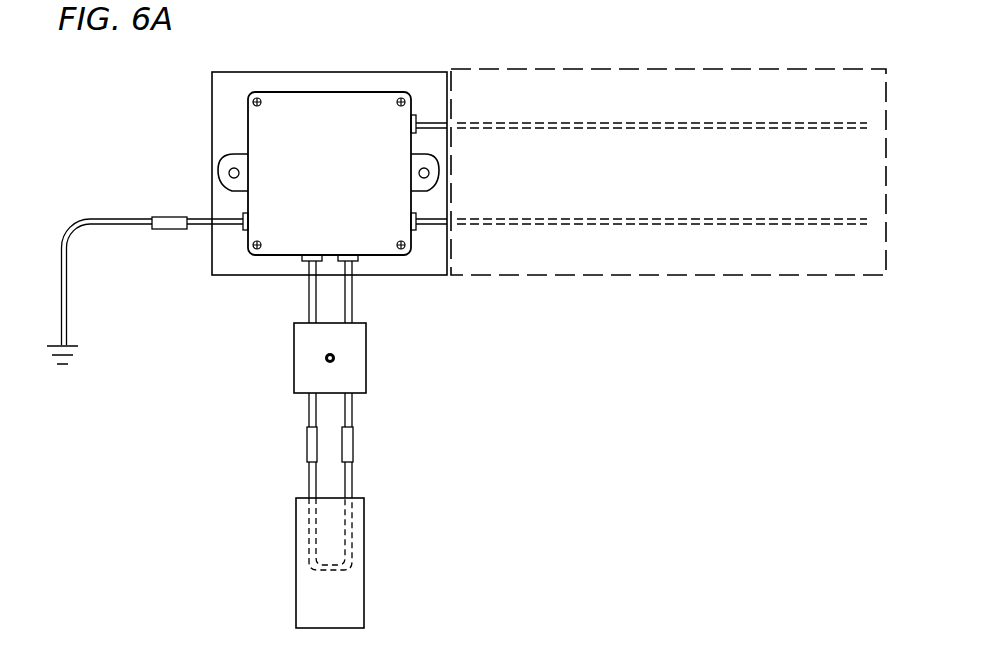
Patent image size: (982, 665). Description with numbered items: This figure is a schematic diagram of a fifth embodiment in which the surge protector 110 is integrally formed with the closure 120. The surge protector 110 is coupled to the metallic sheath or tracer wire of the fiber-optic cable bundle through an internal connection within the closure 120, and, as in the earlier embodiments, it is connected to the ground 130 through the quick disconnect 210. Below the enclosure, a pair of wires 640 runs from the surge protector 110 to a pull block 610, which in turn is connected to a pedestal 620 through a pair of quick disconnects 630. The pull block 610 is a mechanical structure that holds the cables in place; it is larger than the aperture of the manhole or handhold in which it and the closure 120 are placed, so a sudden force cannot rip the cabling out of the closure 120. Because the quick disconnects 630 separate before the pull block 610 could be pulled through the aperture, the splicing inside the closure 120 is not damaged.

The surge protector 110 is at (298, 88).
The closure 120 is at (667, 69).
The ground 130 is at (73, 343).
The quick disconnect 210 is at (168, 217).
The pull block 610 is at (295, 373).
The pedestal 620 is at (362, 598).
The quick disconnects 630 is at (307, 440).
The wires 640 is at (307, 292).